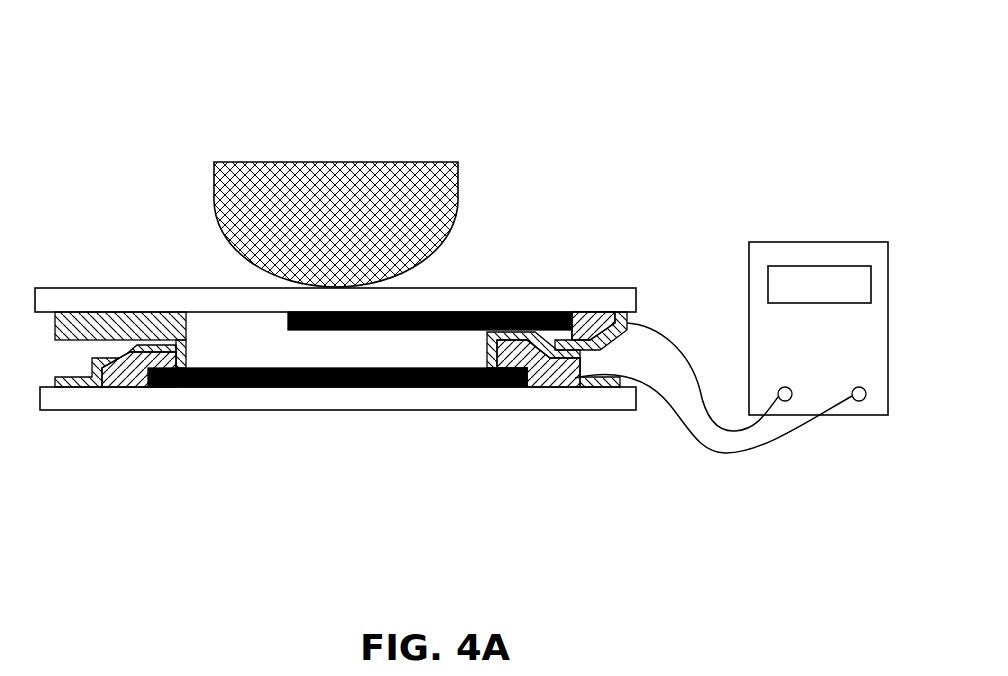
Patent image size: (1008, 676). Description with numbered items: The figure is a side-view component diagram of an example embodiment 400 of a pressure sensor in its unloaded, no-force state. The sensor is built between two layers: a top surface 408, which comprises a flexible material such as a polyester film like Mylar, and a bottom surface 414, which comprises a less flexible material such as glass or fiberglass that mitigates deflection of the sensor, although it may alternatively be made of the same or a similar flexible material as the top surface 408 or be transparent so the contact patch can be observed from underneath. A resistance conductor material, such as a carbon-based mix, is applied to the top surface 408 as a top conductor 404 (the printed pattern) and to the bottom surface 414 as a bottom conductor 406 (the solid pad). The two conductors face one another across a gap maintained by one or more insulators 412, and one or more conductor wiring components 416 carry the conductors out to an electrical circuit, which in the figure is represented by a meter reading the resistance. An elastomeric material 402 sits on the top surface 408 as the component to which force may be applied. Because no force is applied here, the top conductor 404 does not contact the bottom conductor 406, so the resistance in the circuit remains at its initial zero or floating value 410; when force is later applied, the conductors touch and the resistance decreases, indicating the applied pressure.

The example embodiment of a pressure sensor 400 is at (178, 77).
The elastomeric material 402 is at (213, 192).
The top conductor 404 is at (453, 312).
The bottom conductor 406 is at (453, 387).
The top surface 408 is at (588, 288).
The floating value 410 is at (805, 242).
The insulator 412 is at (138, 313).
The bottom surface 414 is at (170, 411).
The conductor wiring component 416 is at (538, 385).